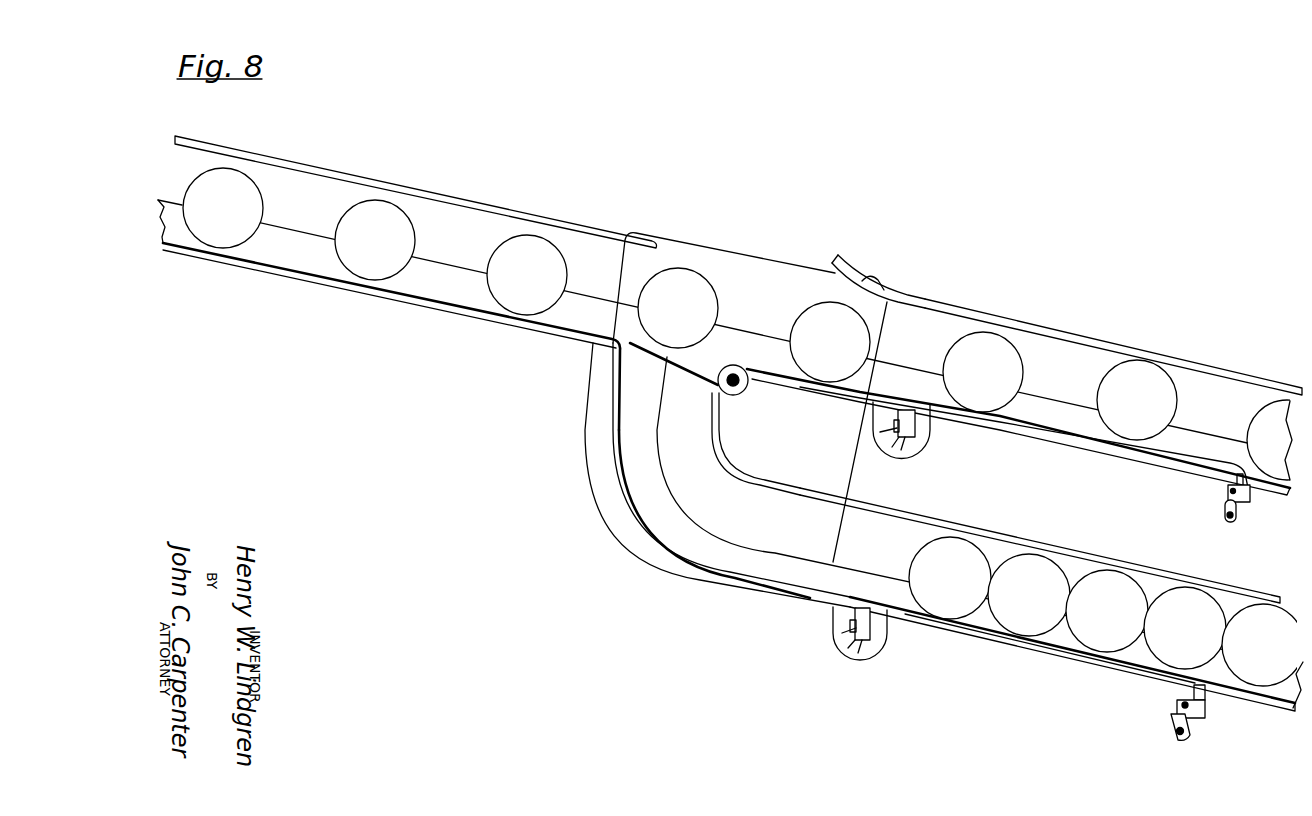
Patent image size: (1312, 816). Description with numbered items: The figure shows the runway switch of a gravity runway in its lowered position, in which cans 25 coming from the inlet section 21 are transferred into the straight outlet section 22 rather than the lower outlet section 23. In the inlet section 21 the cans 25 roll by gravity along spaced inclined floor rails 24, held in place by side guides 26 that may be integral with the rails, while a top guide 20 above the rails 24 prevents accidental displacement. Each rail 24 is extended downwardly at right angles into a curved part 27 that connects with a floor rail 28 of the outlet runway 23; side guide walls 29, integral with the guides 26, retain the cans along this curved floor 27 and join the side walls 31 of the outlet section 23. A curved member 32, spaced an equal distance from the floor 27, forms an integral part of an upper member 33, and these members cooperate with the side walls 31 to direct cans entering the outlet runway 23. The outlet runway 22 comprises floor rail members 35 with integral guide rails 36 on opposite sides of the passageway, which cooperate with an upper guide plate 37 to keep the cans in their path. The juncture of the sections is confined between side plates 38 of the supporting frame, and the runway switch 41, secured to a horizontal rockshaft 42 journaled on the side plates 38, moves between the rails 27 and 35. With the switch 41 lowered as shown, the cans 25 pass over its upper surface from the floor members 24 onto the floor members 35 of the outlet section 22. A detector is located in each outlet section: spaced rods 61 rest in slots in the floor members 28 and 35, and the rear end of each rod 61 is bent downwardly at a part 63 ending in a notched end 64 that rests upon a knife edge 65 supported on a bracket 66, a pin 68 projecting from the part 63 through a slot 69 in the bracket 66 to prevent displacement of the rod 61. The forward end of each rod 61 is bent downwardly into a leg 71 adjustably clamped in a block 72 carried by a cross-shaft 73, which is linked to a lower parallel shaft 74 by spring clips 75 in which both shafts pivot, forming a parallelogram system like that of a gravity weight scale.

The top guide 20 is at (408, 190).
The inlet section 21 is at (296, 189).
The outlet section 22 is at (1088, 366).
The outlet section 23 is at (1001, 552).
The floor rail 24 is at (308, 272).
The can 25 is at (747, 438).
The side guide 26 is at (423, 285).
The curved part 27 is at (610, 433).
The floor rail 28 is at (1044, 647).
The side guide wall 29 is at (628, 390).
The side wall 31 is at (870, 571).
The curved member 32 is at (714, 418).
The upper member 33 is at (1136, 551).
The floor rail member 35 is at (1147, 459).
The guide rail 36 is at (1194, 438).
The upper guide plate 37 is at (1087, 337).
The side plate 38 is at (715, 251).
The runway switch 41 is at (701, 366).
The rockshaft 42 is at (748, 383).
The rod 61 is at (1098, 440).
The downwardly bent part 63 is at (916, 423).
The notched end 64 is at (927, 438).
The knife edge 65 is at (904, 448).
The bracket 66 is at (920, 446).
The pin 68 is at (850, 624).
The slot 69 is at (879, 440).
The leg 71 is at (1245, 505).
The block 72 is at (1250, 495).
The cross-shaft 73 is at (1230, 491).
The lower parallel shaft 74 is at (1233, 520).
The spring clip 75 is at (1225, 507).